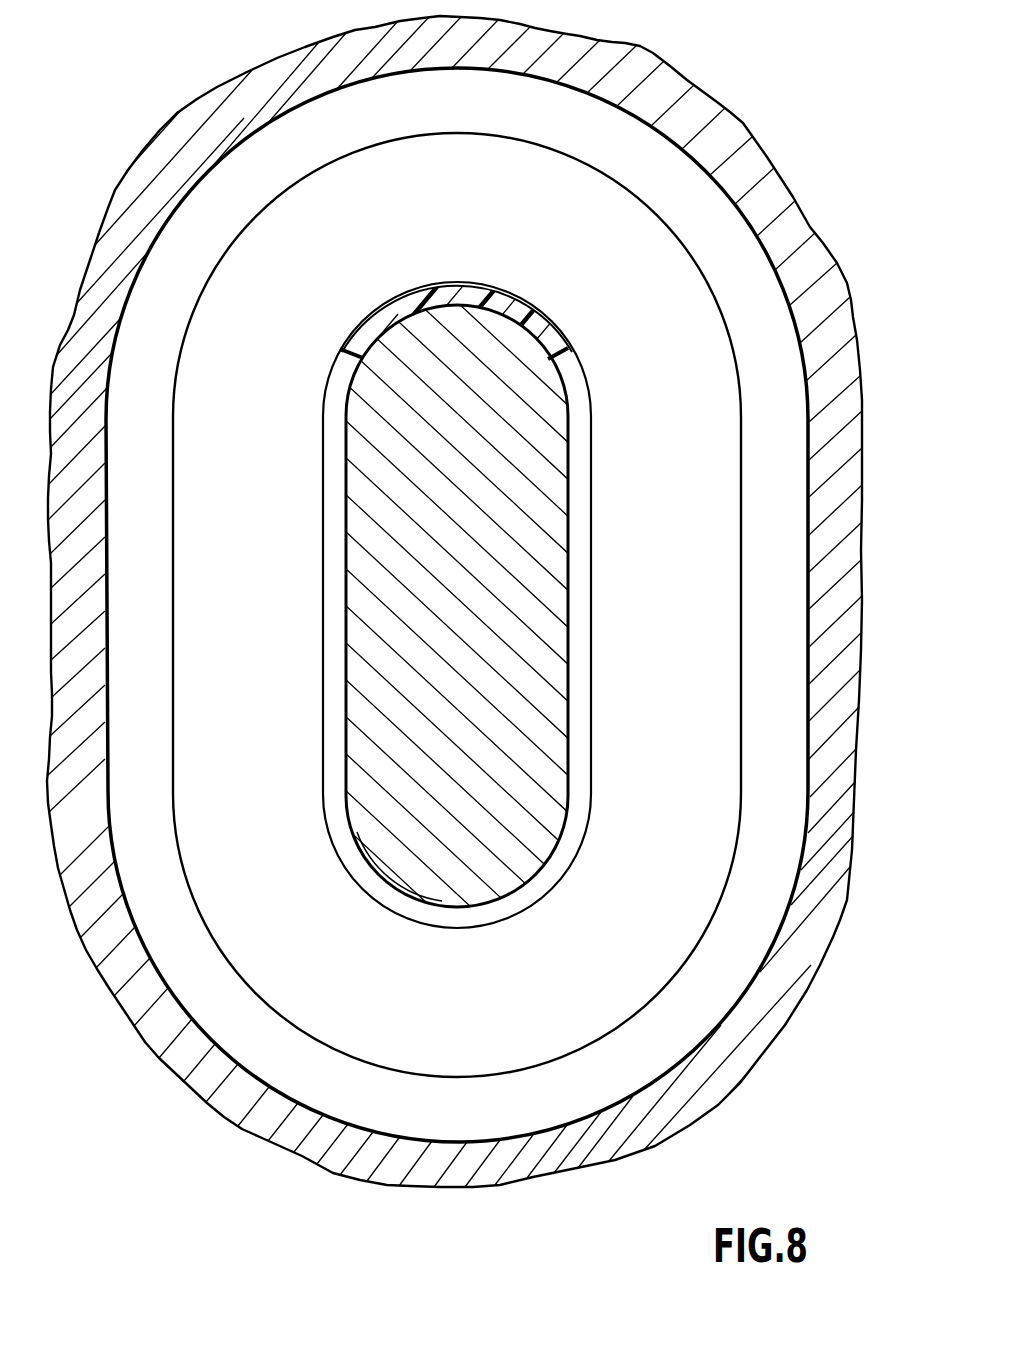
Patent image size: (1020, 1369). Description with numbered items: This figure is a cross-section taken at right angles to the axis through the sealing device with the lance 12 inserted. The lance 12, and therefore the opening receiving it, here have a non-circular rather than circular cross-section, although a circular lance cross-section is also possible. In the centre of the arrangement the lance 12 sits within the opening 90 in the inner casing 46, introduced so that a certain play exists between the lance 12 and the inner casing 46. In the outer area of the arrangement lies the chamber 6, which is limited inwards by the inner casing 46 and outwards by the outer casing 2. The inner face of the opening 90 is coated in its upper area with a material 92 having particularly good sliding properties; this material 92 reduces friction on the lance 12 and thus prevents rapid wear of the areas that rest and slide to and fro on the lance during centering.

The outer casing 2 is at (642, 81).
The chamber 6 is at (671, 200).
The inner casing 46 is at (710, 451).
The opening 90 is at (583, 535).
The material 92 is at (553, 337).
The lance 12 is at (540, 628).